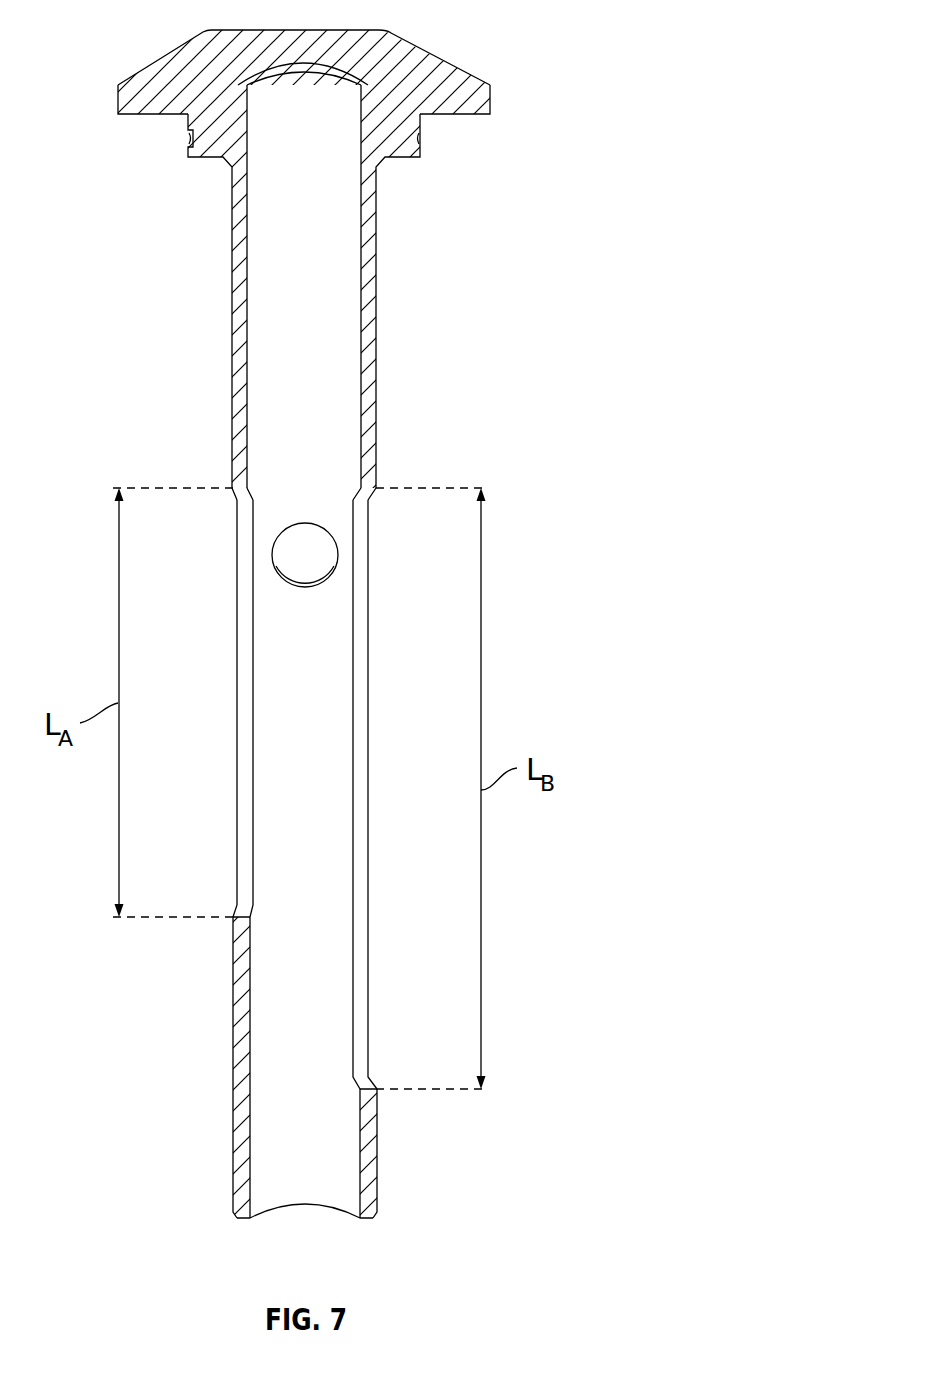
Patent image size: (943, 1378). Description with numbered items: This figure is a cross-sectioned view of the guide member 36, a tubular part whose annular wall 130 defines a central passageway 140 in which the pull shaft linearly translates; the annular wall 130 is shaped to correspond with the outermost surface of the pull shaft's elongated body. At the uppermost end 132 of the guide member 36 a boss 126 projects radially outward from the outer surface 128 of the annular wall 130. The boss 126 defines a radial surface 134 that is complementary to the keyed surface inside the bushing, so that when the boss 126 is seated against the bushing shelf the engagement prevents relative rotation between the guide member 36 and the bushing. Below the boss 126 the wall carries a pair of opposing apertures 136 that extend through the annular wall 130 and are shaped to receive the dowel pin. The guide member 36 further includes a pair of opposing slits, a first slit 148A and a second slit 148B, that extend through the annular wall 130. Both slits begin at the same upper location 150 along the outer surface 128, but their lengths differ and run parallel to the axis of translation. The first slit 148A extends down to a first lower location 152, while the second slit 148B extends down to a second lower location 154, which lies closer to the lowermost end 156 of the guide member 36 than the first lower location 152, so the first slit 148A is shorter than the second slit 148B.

The boss 126 is at (417, 53).
The radial surface 134 is at (470, 73).
The uppermost end 132 is at (500, 102).
The outer surface 128 is at (377, 227).
The annular wall 130 is at (367, 274).
The passageway 140 is at (273, 392).
The upper location 150 is at (376, 455).
The apertures 136 is at (287, 531).
The guide member 36 is at (490, 498).
The first slit 148A is at (232, 778).
The second slit 148B is at (375, 908).
The first lower location 152 is at (233, 925).
The second lower location 154 is at (376, 1093).
The lowermost end 156 is at (384, 1224).